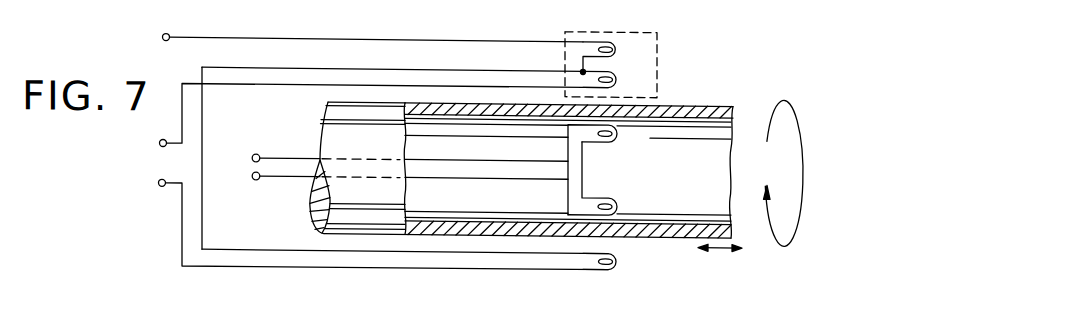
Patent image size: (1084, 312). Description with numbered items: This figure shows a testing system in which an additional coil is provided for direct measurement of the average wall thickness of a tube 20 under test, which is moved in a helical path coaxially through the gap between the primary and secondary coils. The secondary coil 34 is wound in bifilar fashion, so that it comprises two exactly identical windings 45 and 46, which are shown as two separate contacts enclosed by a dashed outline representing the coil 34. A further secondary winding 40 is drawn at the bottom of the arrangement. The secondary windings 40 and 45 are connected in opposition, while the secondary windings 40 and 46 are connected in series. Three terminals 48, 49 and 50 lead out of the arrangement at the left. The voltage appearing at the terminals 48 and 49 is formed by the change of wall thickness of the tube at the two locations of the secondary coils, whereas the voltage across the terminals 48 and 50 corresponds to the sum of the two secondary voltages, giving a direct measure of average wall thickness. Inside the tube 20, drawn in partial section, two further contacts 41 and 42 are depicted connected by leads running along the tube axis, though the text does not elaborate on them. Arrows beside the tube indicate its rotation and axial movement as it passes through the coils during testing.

The tube 20 is at (708, 98).
The secondary coil 34 is at (658, 40).
The secondary winding 40 is at (616, 256).
The electrode 41 is at (617, 128).
The electrode 42 is at (617, 200).
The winding 45 is at (613, 71).
The winding 46 is at (613, 38).
The terminal 48 is at (158, 181).
The terminal 49 is at (160, 141).
The terminal 50 is at (162, 34).